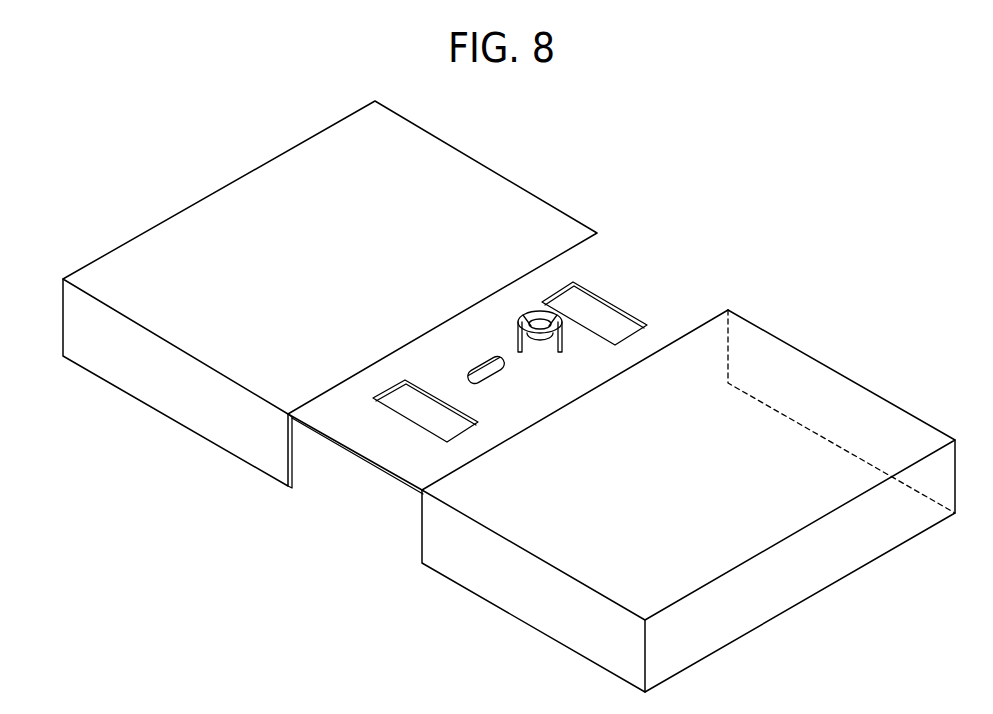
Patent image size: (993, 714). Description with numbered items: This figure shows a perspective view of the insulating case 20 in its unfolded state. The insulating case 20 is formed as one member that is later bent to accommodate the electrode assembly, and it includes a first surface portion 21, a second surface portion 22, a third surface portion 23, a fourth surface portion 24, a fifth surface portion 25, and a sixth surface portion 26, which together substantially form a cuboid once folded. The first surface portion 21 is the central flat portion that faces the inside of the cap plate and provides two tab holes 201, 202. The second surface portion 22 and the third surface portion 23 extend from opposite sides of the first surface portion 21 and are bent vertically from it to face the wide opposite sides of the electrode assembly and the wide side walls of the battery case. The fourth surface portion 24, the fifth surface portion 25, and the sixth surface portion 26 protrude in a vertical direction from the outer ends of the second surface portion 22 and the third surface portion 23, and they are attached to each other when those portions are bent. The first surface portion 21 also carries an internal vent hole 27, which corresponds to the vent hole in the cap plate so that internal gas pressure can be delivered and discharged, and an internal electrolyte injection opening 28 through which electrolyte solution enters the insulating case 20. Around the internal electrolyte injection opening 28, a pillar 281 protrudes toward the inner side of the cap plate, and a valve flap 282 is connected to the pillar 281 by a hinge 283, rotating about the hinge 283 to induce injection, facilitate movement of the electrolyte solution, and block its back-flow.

The insulating case 20 is at (605, 151).
The first surface portion 21 is at (628, 265).
The second surface portion 22 is at (443, 157).
The third surface portion 23 is at (803, 367).
The fourth surface portion 24 is at (198, 403).
The fifth surface portion 25 is at (900, 403).
The sixth surface portion 26 is at (827, 560).
The internal vent hole 27 is at (482, 362).
The internal electrolyte injection opening 28 is at (537, 348).
The tab hole 201 is at (393, 387).
The tab hole 202 is at (560, 290).
The pillar 281 is at (517, 340).
The valve flap 282 is at (537, 313).
The hinge 283 is at (542, 348).